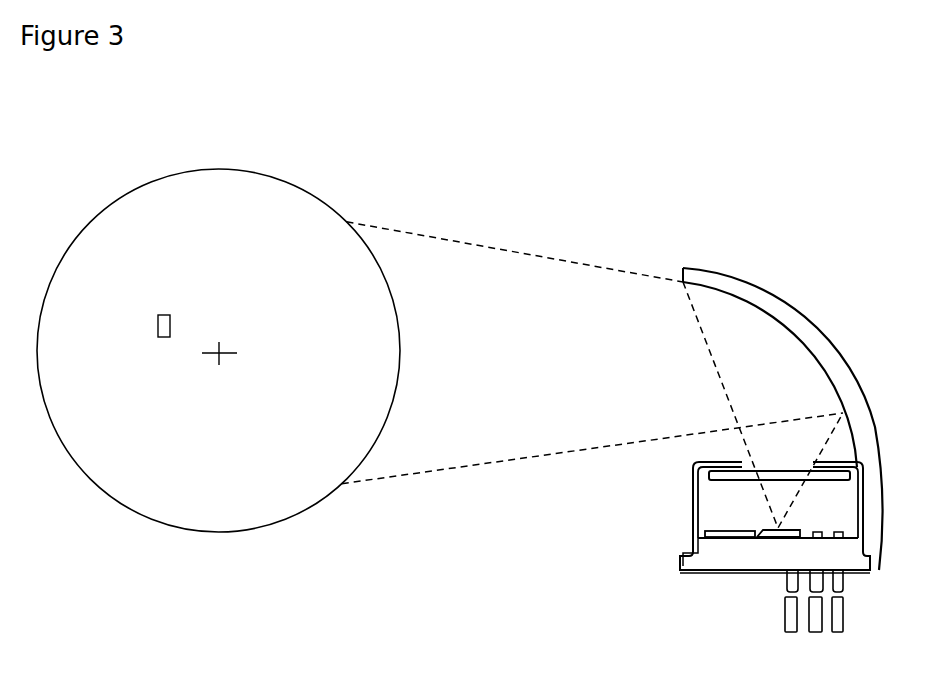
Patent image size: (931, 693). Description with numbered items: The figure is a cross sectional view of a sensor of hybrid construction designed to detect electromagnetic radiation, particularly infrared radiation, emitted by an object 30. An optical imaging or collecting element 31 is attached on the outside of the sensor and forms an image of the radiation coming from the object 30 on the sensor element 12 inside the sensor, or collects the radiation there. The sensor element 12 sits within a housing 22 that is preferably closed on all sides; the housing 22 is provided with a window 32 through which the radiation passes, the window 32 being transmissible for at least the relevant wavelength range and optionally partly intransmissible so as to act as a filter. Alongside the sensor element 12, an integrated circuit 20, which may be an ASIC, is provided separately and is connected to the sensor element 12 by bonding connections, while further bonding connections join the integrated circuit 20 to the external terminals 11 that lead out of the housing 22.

The object 30 is at (218, 349).
The optical imaging or collecting element 31 is at (783, 419).
The window 32 is at (779, 487).
The housing 22 is at (767, 517).
The integrated circuit 20 is at (774, 545).
The sensor element 12 is at (778, 545).
The external terminals 11 is at (814, 613).